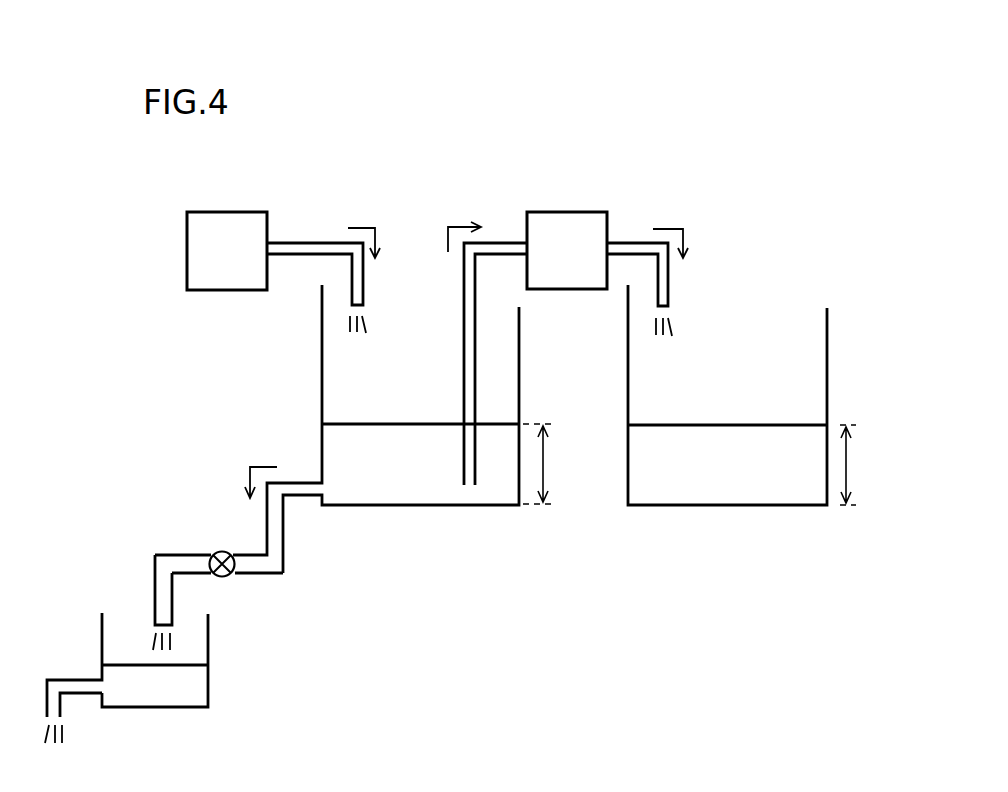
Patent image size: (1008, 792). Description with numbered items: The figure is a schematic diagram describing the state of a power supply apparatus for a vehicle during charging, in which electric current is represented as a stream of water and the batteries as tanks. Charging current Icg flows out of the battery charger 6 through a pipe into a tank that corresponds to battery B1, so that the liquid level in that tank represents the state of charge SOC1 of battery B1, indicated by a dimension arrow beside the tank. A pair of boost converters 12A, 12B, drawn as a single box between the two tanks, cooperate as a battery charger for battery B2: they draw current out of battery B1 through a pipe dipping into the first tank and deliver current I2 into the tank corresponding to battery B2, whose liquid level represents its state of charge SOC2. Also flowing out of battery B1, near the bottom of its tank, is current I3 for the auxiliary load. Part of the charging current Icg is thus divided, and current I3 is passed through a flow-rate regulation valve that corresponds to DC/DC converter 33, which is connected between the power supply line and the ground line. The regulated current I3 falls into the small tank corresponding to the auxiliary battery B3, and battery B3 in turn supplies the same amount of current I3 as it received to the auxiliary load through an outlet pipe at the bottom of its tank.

The battery charger 6 is at (240, 212).
The boost converter 12A is at (566, 319).
The boost converter 12B is at (573, 211).
The DC/DC converter 33 is at (218, 548).
The battery B1 is at (432, 506).
The battery B2 is at (732, 507).
The auxiliary battery B3 is at (210, 685).
The charging current Icg is at (373, 280).
The current I2 is at (685, 282).
The current I3 is at (261, 468).
The state of charge of battery B1 SOC1 is at (564, 464).
The state of charge of battery B2 SOC2 is at (875, 465).